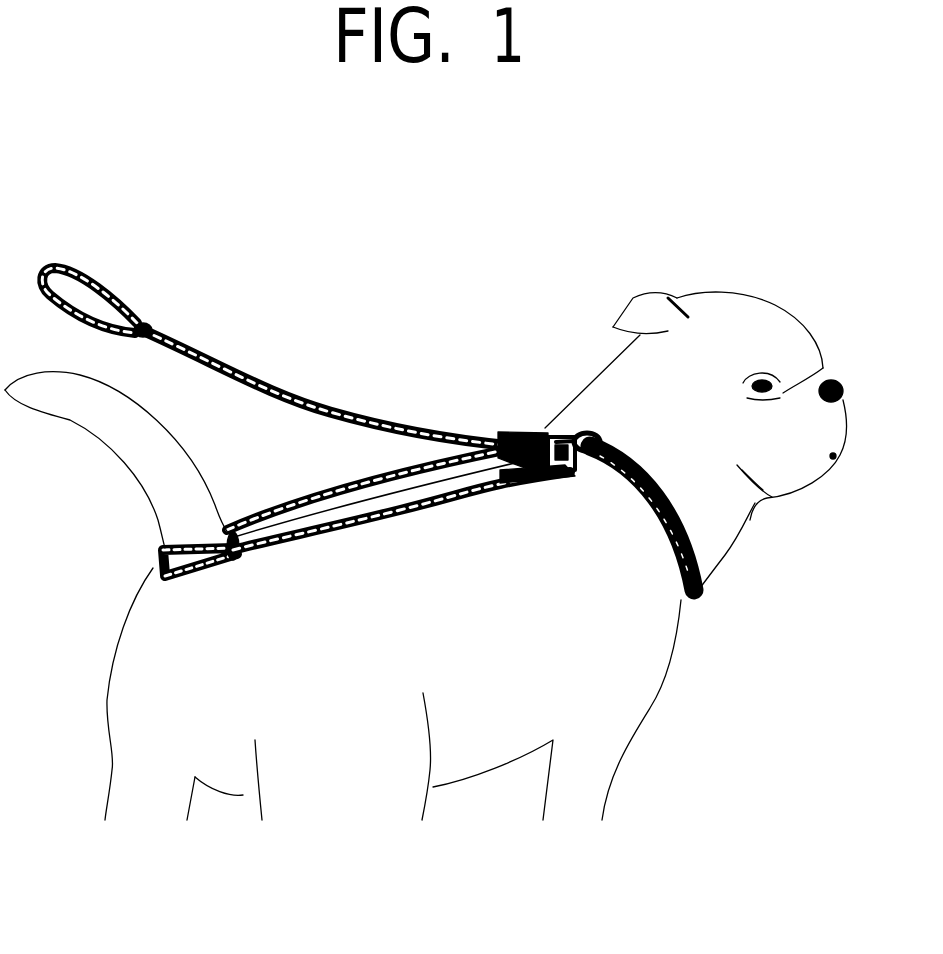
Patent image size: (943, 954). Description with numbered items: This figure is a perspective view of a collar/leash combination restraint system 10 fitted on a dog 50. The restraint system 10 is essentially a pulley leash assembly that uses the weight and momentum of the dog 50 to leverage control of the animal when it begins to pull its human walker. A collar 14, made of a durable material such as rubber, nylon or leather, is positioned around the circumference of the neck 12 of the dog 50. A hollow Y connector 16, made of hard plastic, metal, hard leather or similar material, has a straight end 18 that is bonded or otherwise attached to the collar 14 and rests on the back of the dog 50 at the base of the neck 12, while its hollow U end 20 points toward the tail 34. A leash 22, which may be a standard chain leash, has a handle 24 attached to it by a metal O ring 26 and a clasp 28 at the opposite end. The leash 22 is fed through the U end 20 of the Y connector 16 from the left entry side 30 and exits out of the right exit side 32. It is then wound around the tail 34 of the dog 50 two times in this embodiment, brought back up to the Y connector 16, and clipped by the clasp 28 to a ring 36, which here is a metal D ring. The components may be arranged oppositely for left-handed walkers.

The collar/leash combination restraint system 10 is at (104, 140).
The neck 12 is at (735, 514).
The collar 14 is at (707, 563).
The hollow Y connector 16 is at (560, 432).
The straight end 18 is at (553, 430).
The hollow U end 20 is at (543, 432).
The leash 22 is at (325, 400).
The handle 24 is at (103, 287).
The O ring 26 is at (147, 325).
The clasp 28 is at (509, 482).
The left entry side 30 is at (505, 438).
The right exit side 32 is at (560, 450).
The tail 34 is at (152, 462).
The ring 36 is at (547, 470).
The dog 50 is at (763, 270).